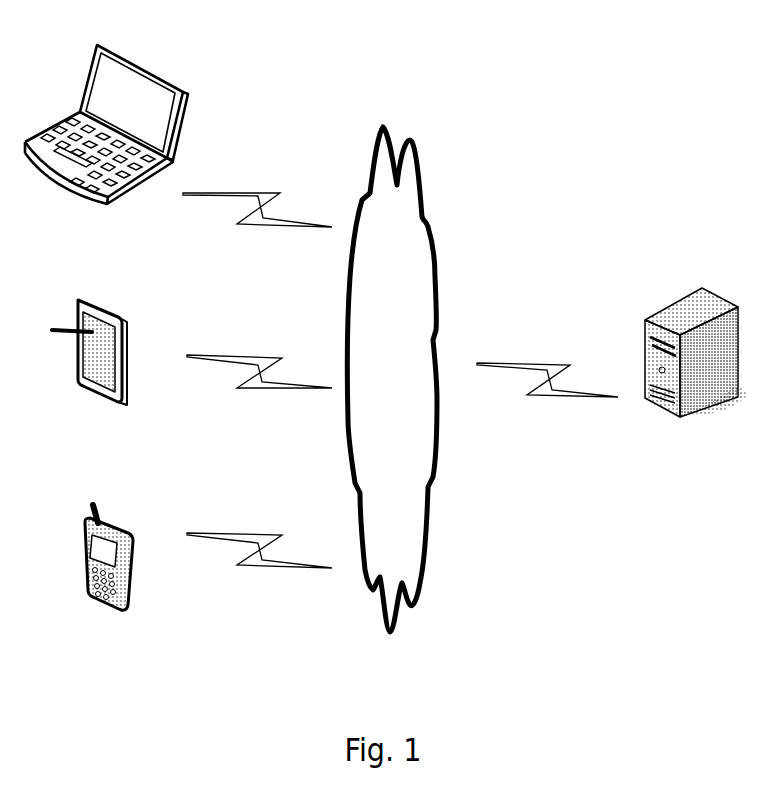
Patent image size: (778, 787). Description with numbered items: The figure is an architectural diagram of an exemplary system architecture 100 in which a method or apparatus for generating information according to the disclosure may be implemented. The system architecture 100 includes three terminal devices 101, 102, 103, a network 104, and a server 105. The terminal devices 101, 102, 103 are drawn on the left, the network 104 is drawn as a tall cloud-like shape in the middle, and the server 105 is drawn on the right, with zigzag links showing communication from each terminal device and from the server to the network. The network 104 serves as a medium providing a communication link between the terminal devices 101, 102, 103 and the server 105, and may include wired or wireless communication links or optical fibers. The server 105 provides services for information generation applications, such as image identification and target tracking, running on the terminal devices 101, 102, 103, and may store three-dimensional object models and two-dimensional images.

The system architecture 100 is at (651, 35).
The terminal device 101 is at (109, 578).
The terminal device 102 is at (89, 372).
The terminal device 103 is at (106, 144).
The network 104 is at (392, 379).
The server 105 is at (696, 375).